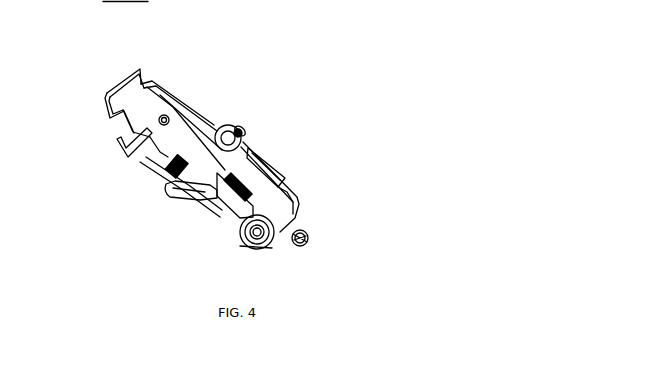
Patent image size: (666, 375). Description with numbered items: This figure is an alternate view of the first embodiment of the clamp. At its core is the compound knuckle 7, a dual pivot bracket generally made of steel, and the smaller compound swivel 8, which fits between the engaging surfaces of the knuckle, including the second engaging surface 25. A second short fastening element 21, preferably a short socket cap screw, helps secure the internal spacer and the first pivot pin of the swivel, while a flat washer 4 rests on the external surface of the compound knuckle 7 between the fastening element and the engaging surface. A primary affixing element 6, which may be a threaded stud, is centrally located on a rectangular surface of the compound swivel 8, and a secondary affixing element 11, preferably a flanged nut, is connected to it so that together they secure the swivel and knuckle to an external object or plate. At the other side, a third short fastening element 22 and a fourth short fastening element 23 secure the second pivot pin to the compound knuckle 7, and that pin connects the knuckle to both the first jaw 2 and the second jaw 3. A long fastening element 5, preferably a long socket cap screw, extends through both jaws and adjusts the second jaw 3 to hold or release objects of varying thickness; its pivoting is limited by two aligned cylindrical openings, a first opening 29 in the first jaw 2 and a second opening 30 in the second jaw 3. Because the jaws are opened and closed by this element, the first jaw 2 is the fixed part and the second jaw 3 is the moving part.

The first jaw 2 is at (105, 99).
The second jaw 3 is at (117, 143).
The washer 4 is at (240, 234).
The long fastening element 5 is at (166, 182).
The primary affixing element 6 is at (310, 220).
The compound knuckle 7 is at (273, 163).
The compound swivel 8 is at (287, 190).
The secondary affixing element 11 is at (313, 232).
The second short fastening element 21 is at (262, 243).
The third short fastening element 22 is at (168, 195).
The fourth short fastening element 23 is at (243, 137).
The second engaging surface 25 is at (252, 252).
The first opening 29 is at (174, 103).
The second opening 30 is at (170, 160).